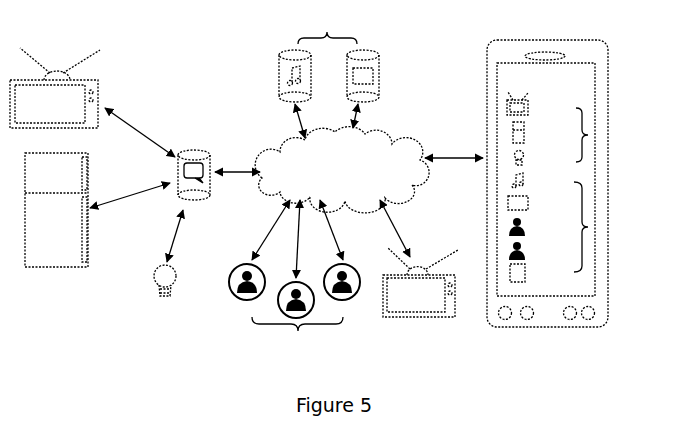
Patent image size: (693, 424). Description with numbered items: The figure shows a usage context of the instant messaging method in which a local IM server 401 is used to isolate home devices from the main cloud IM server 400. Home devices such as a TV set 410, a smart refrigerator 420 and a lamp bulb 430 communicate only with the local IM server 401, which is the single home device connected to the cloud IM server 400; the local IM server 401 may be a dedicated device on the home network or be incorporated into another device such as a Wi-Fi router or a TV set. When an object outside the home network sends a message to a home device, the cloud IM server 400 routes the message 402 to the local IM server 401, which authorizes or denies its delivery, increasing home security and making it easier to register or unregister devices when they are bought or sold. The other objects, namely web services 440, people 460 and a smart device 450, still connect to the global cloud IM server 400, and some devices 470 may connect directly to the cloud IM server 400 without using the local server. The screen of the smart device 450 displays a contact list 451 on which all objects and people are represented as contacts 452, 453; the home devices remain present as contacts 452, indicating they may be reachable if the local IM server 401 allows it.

The cloud IM server 400 is at (342, 170).
The local IM server 401 is at (194, 164).
The message 402 is at (237, 162).
The TV set 410 is at (92, 102).
The smart refrigerator 420 is at (97, 210).
The lamp bulb 430 is at (152, 283).
The web services 440 is at (329, 76).
The smart device 450 is at (483, 108).
The contact list 451 is at (576, 85).
The contacts 452 is at (589, 135).
The contacts 453 is at (590, 227).
The people 460 is at (294, 280).
The devices 470 is at (419, 258).